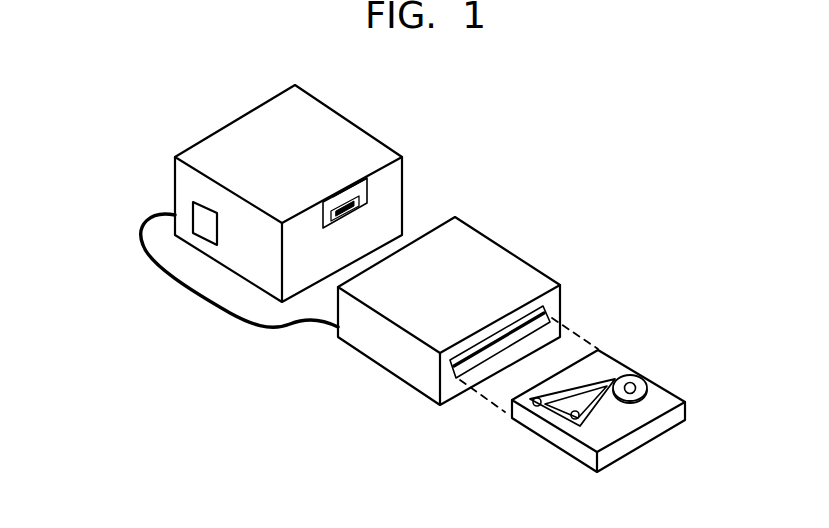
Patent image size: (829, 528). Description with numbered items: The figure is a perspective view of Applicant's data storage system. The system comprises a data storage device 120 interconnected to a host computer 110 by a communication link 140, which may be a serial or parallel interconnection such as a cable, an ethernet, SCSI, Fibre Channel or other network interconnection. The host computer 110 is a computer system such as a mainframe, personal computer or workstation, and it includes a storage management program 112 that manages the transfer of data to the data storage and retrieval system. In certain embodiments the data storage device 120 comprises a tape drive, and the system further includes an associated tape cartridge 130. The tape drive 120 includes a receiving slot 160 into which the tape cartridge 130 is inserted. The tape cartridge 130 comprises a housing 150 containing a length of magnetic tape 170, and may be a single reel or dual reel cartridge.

The host computer 110 is at (348, 100).
The storage management program 112 is at (200, 217).
The data storage device 120 is at (520, 224).
The tape cartridge 130 is at (661, 357).
The communication link 140 is at (185, 290).
The housing 150 is at (675, 418).
The receiving slot 160 is at (538, 323).
The magnetic tape 170 is at (582, 392).